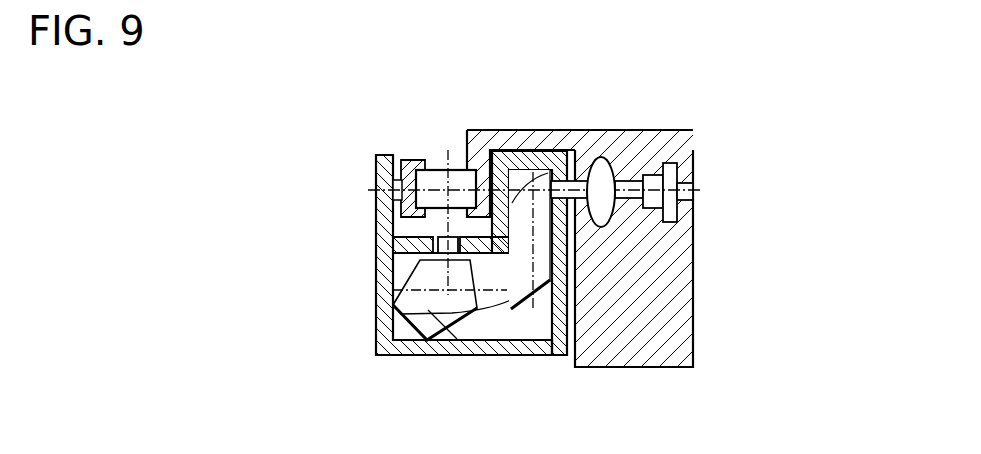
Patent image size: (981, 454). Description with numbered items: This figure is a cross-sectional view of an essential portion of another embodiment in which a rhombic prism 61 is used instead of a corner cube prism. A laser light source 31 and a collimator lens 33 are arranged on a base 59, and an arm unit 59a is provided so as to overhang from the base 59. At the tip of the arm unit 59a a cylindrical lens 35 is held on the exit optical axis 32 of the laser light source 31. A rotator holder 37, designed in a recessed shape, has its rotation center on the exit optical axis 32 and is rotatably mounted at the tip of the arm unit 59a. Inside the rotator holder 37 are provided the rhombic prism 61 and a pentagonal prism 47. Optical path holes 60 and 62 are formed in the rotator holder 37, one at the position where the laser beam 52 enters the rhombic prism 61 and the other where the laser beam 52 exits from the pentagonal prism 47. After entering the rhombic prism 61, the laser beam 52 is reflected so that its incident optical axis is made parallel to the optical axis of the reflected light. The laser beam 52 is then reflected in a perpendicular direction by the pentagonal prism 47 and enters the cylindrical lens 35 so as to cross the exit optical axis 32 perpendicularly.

The laser light source 31 is at (676, 209).
The exit optical axis 32 is at (628, 198).
The collimator lens 33 is at (604, 168).
The cylindrical lens 35 is at (436, 160).
The rotator holder 37 is at (390, 300).
The pentagonal prism 47 is at (405, 278).
The laser beam 52 is at (510, 253).
The base 59 is at (653, 130).
The arm unit 59a is at (490, 130).
The optical path hole 60 is at (527, 150).
The rhombic prism 61 is at (422, 305).
The optical path hole 62 is at (433, 238).